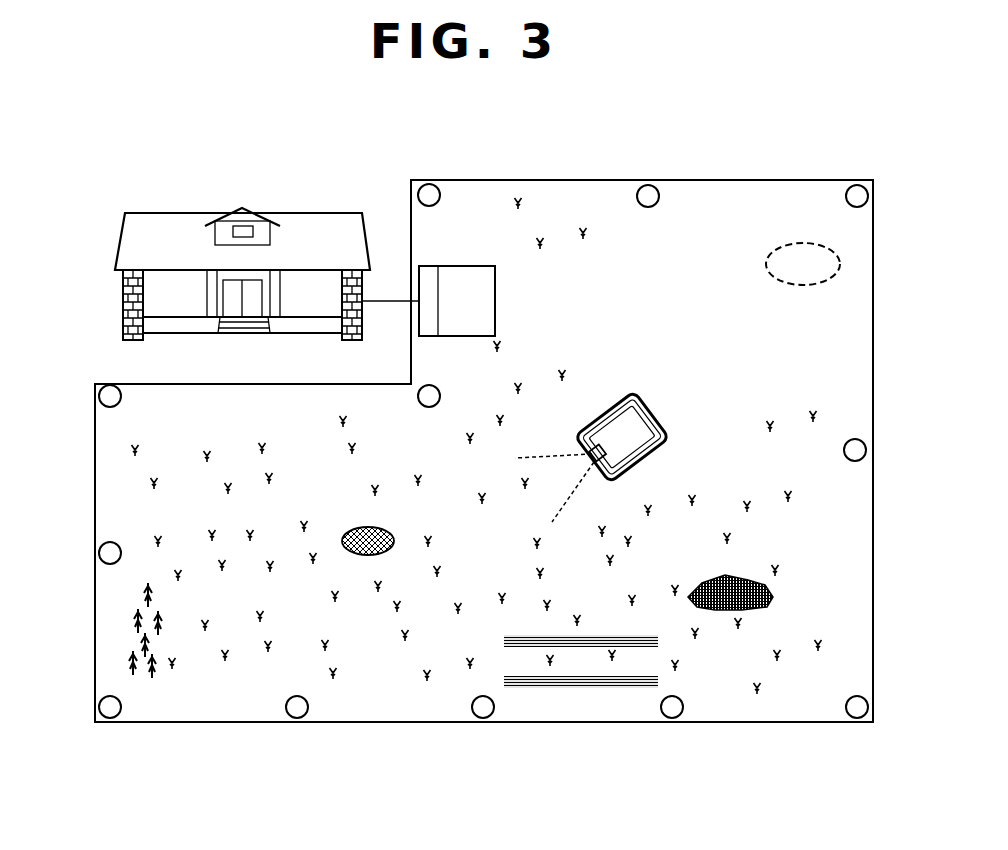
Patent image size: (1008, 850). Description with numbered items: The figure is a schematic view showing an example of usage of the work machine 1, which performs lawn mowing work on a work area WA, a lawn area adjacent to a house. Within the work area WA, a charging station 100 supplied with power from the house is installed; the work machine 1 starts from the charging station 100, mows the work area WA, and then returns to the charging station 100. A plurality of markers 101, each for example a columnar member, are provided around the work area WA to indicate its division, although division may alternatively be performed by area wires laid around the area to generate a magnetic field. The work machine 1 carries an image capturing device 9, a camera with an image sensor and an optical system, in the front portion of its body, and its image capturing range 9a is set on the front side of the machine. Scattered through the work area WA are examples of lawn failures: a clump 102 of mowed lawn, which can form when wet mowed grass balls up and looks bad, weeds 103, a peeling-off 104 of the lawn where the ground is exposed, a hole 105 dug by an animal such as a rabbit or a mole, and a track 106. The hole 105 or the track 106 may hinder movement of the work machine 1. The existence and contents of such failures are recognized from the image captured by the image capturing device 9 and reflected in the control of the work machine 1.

The work machine 1 is at (645, 393).
The image capturing device 9 is at (580, 428).
The image capturing range 9a is at (582, 486).
The charging station 100 is at (455, 265).
The markers 101 is at (433, 184).
The clump of the mowed lawn 102 is at (775, 595).
The weeds 103 is at (150, 677).
The peeling-off of the lawn 104 is at (815, 286).
The hole 105 is at (363, 556).
The track 106 is at (591, 689).
The work area WA is at (553, 178).